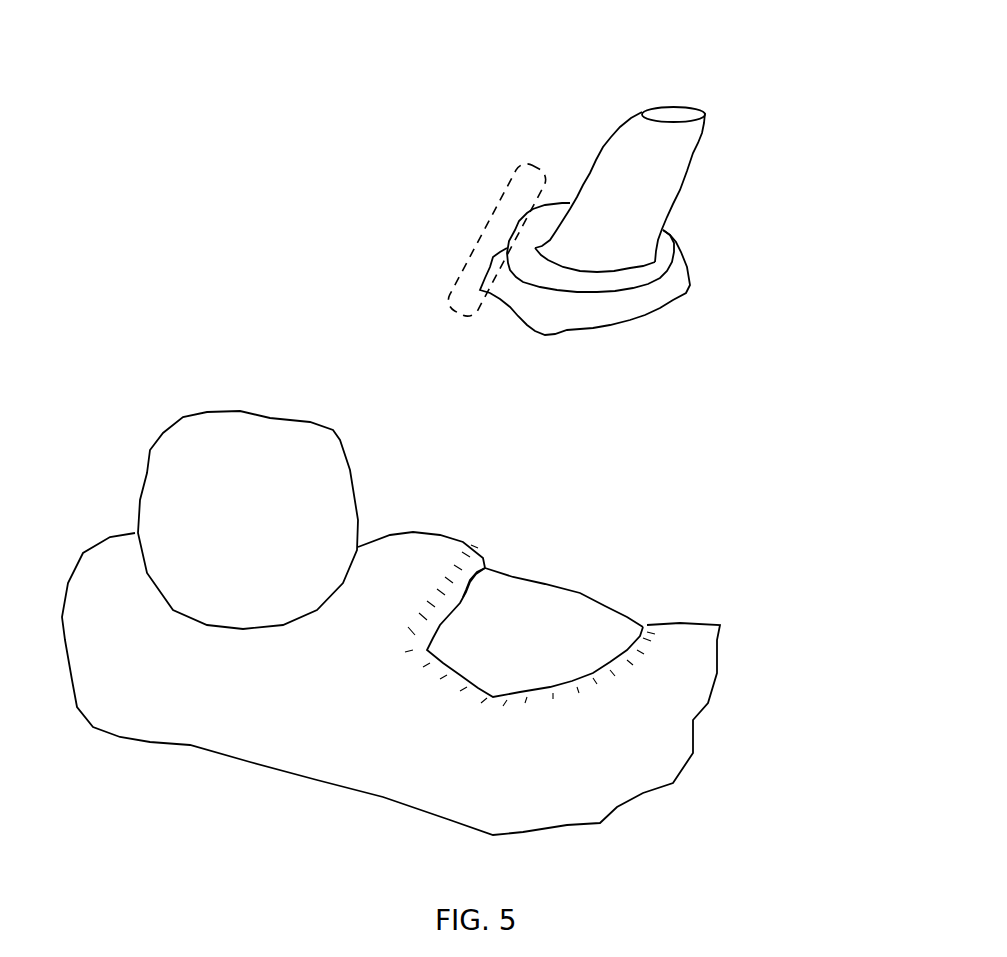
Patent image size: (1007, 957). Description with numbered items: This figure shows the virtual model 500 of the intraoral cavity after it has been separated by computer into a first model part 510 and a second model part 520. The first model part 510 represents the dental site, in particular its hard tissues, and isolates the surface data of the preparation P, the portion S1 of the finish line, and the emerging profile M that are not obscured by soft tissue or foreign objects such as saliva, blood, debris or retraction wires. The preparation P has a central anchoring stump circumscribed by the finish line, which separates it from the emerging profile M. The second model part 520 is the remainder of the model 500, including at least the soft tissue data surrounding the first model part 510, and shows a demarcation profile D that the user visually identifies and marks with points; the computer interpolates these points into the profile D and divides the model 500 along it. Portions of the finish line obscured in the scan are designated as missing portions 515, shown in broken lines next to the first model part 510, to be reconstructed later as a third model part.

The virtual model 500 is at (715, 87).
The first model part 510 is at (777, 113).
The preparation P is at (644, 189).
The portion of finish line S1 is at (633, 258).
The emerging profile M is at (592, 295).
The missing portions 515 is at (497, 221).
The second model part 520 is at (435, 623).
The demarcation profile D is at (530, 596).